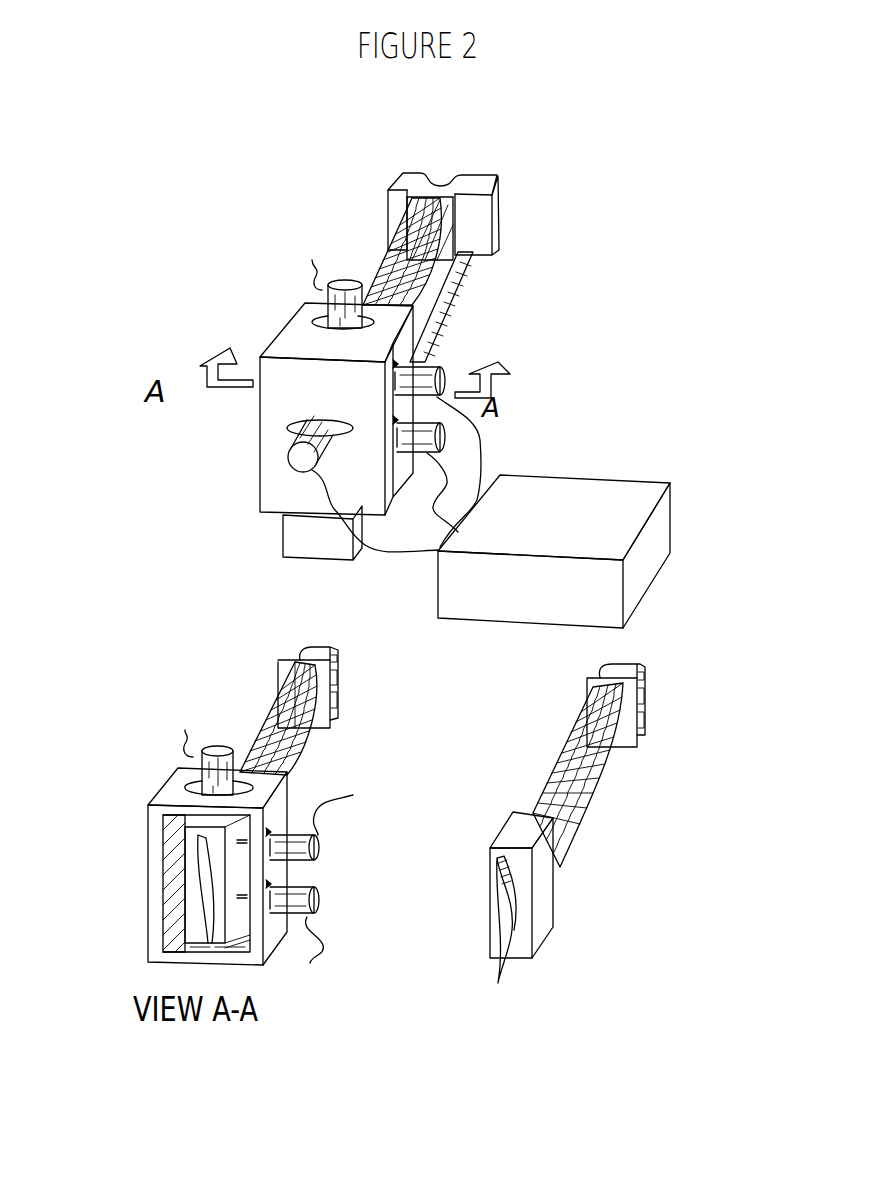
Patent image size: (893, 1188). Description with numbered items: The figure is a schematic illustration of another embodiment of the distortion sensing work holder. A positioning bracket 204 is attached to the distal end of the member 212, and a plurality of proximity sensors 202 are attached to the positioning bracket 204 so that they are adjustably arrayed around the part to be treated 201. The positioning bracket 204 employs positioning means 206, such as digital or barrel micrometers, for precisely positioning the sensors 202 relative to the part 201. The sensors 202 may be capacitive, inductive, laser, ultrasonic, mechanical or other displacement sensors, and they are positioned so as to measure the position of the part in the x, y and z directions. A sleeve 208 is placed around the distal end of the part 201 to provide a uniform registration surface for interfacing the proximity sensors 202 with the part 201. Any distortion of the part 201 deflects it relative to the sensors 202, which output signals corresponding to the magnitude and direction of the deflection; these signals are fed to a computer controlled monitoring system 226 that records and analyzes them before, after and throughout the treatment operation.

The part to be treated 201 is at (260, 747).
The proximity sensors 202 is at (318, 853).
The positioning bracket 204 is at (173, 792).
The positioning means 206 is at (303, 749).
The sleeve 208 is at (545, 902).
The member 212 is at (450, 295).
The computer controlled monitoring system 226 is at (610, 515).